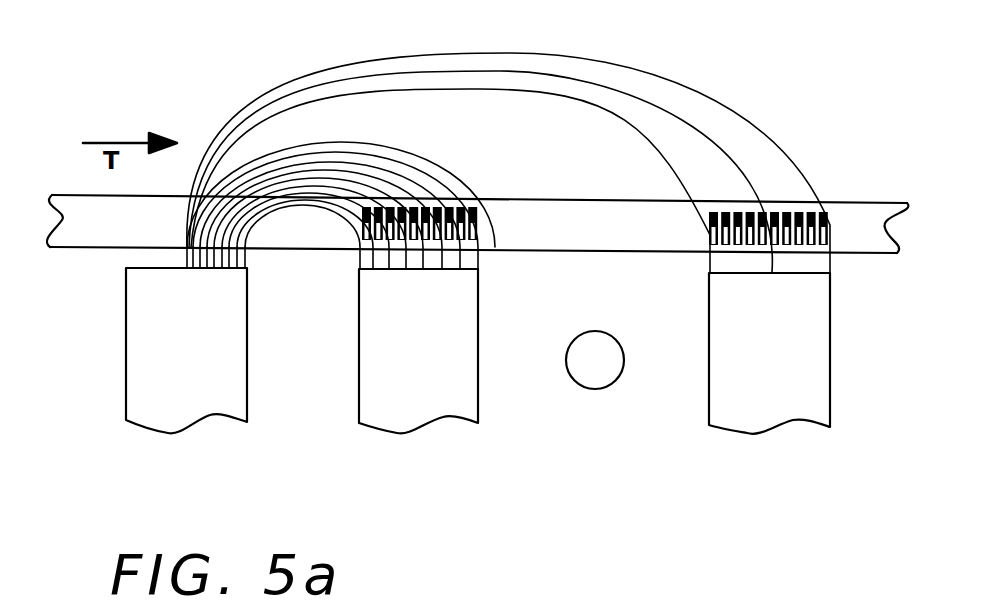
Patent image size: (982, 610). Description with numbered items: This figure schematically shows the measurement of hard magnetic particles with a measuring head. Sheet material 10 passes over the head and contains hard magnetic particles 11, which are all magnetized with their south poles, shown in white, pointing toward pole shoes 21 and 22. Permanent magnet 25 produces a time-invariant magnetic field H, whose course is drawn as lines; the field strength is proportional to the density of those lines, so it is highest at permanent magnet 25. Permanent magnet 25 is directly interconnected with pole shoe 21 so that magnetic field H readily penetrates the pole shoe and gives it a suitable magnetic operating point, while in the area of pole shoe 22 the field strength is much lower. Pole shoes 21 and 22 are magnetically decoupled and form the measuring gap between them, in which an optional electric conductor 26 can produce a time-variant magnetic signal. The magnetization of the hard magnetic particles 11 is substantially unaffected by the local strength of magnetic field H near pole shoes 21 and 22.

The sheet material 10 is at (873, 260).
The hard magnetic particles 11 is at (440, 200).
The pole shoe 21 is at (420, 388).
The pole shoe 22 is at (763, 395).
The permanent magnet 25 is at (188, 383).
The electric conductor 26 is at (588, 368).
The magnetic field H is at (690, 127).